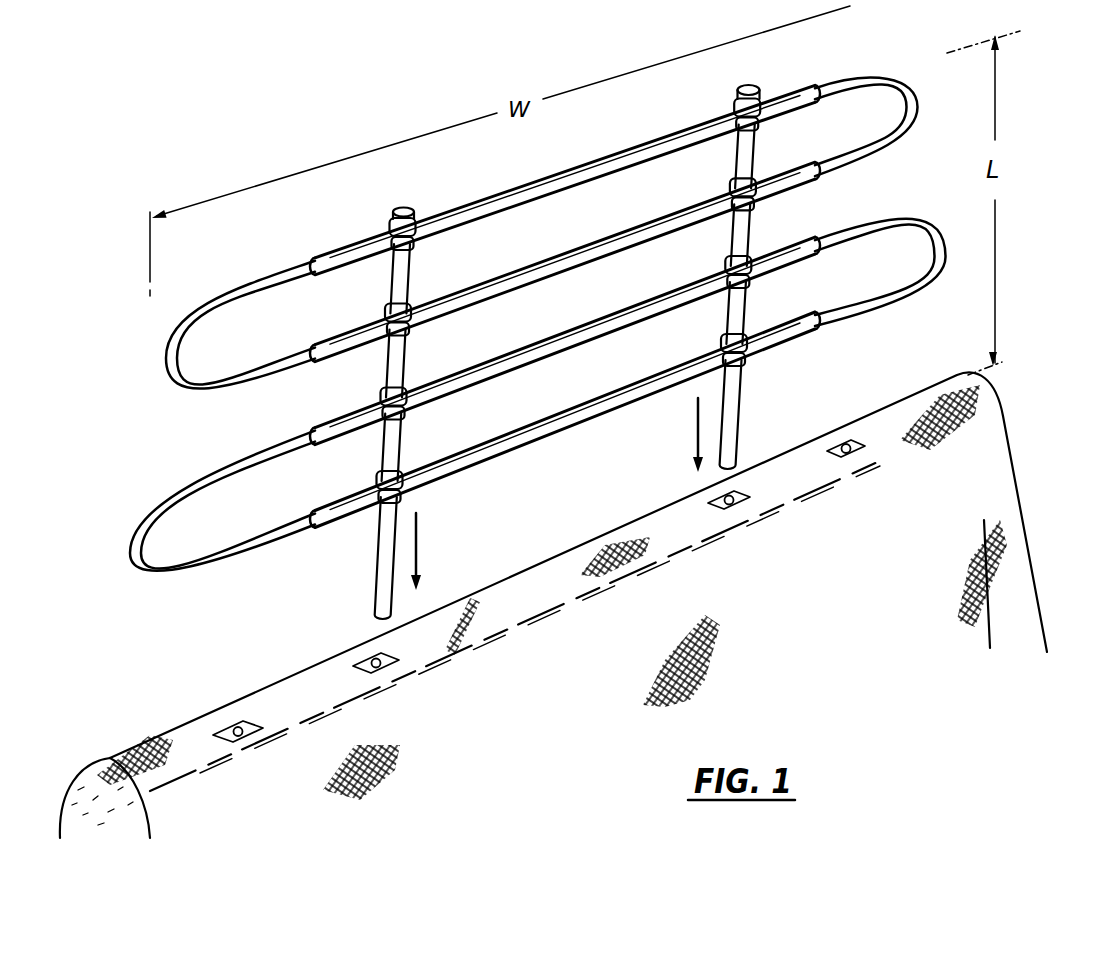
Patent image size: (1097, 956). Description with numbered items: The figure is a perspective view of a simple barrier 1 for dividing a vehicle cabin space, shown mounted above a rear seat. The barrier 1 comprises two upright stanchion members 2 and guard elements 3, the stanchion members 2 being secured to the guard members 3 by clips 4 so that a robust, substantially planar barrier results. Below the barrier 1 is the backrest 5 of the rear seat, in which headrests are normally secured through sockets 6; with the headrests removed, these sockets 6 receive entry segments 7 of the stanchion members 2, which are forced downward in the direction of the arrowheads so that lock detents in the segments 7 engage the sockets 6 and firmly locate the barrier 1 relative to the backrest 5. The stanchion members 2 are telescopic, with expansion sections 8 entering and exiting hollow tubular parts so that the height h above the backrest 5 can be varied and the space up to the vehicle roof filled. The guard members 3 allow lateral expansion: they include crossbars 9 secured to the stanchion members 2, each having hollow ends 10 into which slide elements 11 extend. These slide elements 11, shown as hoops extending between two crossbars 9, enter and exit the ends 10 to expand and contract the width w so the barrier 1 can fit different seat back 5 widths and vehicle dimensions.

The barrier 1 is at (856, 74).
The stanchion member 2 is at (398, 208).
The guard element 3 is at (572, 170).
The clip 4 is at (397, 230).
The backrest 5 is at (1007, 550).
The socket 6 is at (236, 728).
The entry segment 7 is at (383, 560).
The expansion section 8 is at (413, 343).
The crossbar 9 is at (535, 196).
The hollow end 10 is at (795, 103).
The slide element 11 is at (921, 110).